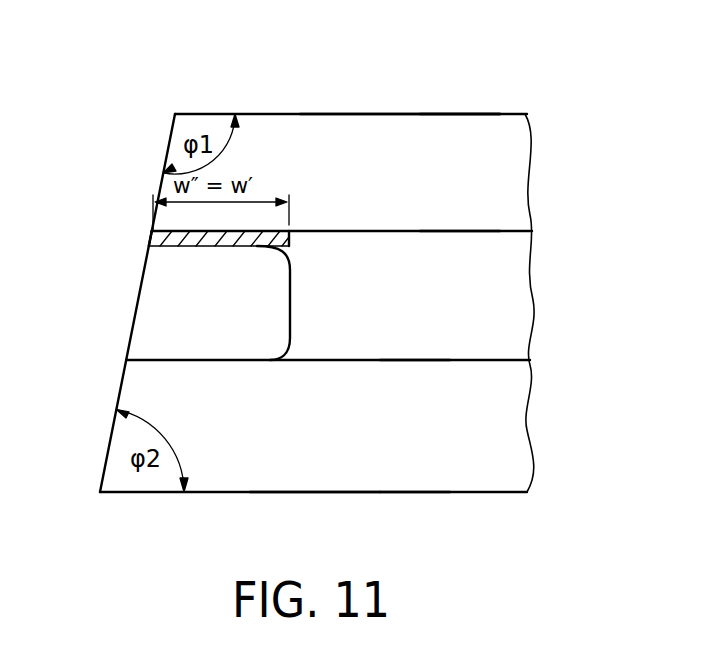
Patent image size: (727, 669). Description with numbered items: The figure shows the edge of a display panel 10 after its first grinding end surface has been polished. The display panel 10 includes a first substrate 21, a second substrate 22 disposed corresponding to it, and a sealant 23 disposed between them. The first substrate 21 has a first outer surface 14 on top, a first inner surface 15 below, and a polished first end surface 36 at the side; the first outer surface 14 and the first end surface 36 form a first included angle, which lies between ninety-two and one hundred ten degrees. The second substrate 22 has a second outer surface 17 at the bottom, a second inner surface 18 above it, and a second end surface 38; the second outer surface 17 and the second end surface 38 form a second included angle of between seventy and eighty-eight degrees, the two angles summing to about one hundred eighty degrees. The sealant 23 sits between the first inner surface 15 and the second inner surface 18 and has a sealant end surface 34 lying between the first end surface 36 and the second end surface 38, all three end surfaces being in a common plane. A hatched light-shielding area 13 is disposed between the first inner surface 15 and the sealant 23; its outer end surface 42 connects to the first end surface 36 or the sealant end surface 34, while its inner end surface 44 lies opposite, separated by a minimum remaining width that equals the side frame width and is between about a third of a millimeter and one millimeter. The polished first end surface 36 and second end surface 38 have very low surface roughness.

The display panel 10 is at (543, 90).
The light-shielding area 13 is at (262, 231).
The first outer surface 14 is at (400, 113).
The first inner surface 15 is at (482, 231).
The second outer surface 17 is at (313, 493).
The second inner surface 18 is at (482, 360).
The first substrate 21 is at (461, 138).
The second substrate 22 is at (410, 465).
The sealant 23 is at (263, 310).
The sealant end surface 34 is at (137, 298).
The first end surface 36 is at (165, 163).
The second end surface 38 is at (119, 396).
The outer end surface 42 is at (152, 236).
The inner end surface 44 is at (290, 239).